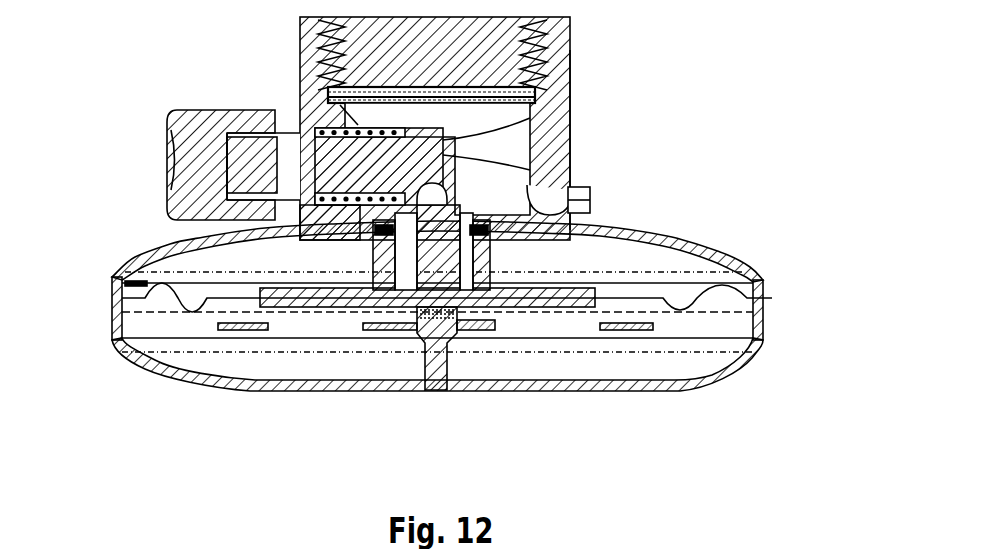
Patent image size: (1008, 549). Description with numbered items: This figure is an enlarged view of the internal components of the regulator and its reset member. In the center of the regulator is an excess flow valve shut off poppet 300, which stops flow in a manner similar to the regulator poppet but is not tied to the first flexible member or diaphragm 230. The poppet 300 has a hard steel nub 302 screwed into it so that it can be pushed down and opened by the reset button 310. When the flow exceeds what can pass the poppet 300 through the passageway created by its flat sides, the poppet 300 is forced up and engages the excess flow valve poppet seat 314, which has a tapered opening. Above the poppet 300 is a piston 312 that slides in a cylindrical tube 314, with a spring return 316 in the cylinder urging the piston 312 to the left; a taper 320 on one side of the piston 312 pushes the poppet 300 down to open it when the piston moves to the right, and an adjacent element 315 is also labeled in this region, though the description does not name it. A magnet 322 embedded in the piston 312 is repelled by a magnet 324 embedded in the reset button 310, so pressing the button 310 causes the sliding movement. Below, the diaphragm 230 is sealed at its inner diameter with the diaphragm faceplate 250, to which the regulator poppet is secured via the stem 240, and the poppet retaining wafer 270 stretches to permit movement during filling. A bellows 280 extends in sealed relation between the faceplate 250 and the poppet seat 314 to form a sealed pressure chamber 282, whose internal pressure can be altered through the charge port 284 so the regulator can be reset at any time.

The reset button 310 is at (375, 153).
The magnet 322 is at (330, 150).
The magnet 324 is at (218, 173).
The flange 315 is at (540, 93).
The piston 312 is at (505, 130).
The taper 320 is at (500, 152).
The cylindrical tube 314 is at (572, 168).
The charge port 284 is at (590, 203).
The steel nub 302 is at (436, 200).
The pressure chamber 282 is at (680, 268).
The diaphragm 230 is at (772, 297).
The spring return 316 is at (330, 220).
The bellows 280 is at (382, 228).
The excess flow valve shut off poppet 300 is at (475, 262).
The diaphragm faceplate 250 is at (327, 300).
The poppet retaining wafer 270 is at (478, 324).
The stem 240 is at (433, 383).